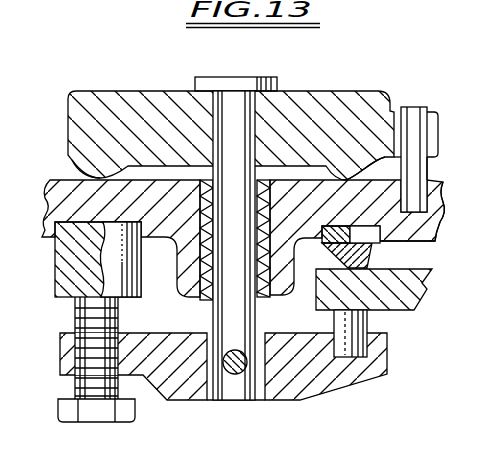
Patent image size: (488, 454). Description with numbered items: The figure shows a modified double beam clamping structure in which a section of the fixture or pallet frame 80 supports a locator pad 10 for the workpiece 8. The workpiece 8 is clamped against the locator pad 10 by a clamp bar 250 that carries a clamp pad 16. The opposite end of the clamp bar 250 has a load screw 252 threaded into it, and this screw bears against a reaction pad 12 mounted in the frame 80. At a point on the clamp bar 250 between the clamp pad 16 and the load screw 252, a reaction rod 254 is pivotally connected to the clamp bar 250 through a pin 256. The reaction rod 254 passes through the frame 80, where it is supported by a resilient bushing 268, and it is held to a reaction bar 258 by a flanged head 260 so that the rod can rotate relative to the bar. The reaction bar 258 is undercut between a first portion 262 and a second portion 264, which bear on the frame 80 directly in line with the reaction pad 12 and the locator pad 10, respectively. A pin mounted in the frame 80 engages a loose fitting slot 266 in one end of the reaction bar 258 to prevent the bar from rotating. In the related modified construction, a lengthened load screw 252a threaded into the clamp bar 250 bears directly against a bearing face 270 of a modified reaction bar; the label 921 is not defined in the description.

The reaction bar 258 is at (70, 123).
The portion of reaction bar 262 is at (82, 163).
The flanged head 260 is at (257, 82).
The portion of reaction bar 264 is at (344, 180).
The loose fitting slot 266 is at (430, 118).
The plate edge 921 is at (427, 167).
The bearing face 270 is at (443, 197).
The fixture or pallet frame 80 is at (433, 223).
The locator pad 10 is at (380, 251).
The workpiece 8 is at (427, 291).
The clamp pad 16 is at (367, 327).
The lengthened load screw 252a is at (486, 312).
The clamp bar 250 is at (353, 385).
The pin 256 is at (233, 370).
The resilient bushing 268 is at (261, 297).
The reaction rod 254 is at (214, 316).
The load screw 252 is at (83, 316).
The reaction pad 12 is at (62, 266).